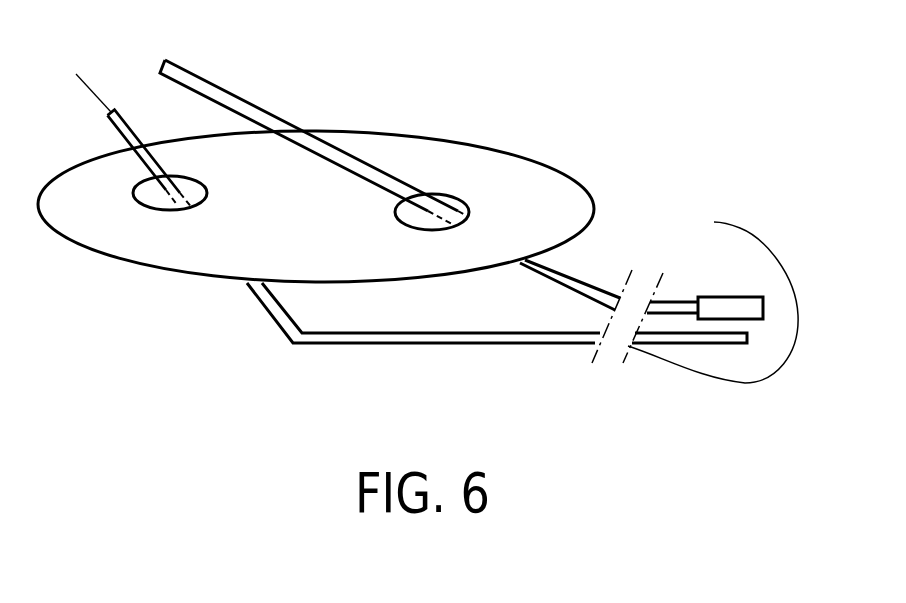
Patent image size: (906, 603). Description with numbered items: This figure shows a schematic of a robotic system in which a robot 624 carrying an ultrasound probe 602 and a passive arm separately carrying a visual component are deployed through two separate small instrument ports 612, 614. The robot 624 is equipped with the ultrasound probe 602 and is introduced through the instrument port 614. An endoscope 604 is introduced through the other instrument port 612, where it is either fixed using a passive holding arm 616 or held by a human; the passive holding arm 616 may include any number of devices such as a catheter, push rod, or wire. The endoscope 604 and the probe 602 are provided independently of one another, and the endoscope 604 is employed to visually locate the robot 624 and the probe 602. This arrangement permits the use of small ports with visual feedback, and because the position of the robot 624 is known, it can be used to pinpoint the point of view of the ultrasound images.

The ultrasound probe 602 is at (728, 297).
The endoscope 604 is at (722, 345).
The instrument port 612 is at (163, 211).
The instrument port 614 is at (463, 199).
The passive holding arm 616 is at (363, 345).
The robot 624 is at (246, 98).